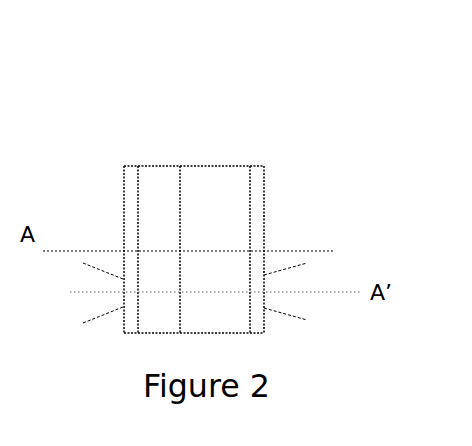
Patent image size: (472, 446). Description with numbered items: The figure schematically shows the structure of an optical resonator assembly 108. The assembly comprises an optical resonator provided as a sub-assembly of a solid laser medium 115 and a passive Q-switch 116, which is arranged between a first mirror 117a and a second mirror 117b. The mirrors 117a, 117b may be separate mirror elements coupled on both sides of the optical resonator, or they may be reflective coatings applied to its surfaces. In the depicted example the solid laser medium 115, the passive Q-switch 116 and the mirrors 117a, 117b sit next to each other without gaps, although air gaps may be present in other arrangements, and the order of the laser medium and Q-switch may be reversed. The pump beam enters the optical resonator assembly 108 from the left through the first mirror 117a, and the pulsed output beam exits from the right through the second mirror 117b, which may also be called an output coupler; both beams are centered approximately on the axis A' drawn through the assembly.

The optical resonator assembly 108 is at (323, 56).
The solid laser medium 115 is at (172, 172).
The passive Q-switch 116 is at (237, 175).
The first mirror 117a is at (124, 207).
The second mirror 117b is at (265, 205).